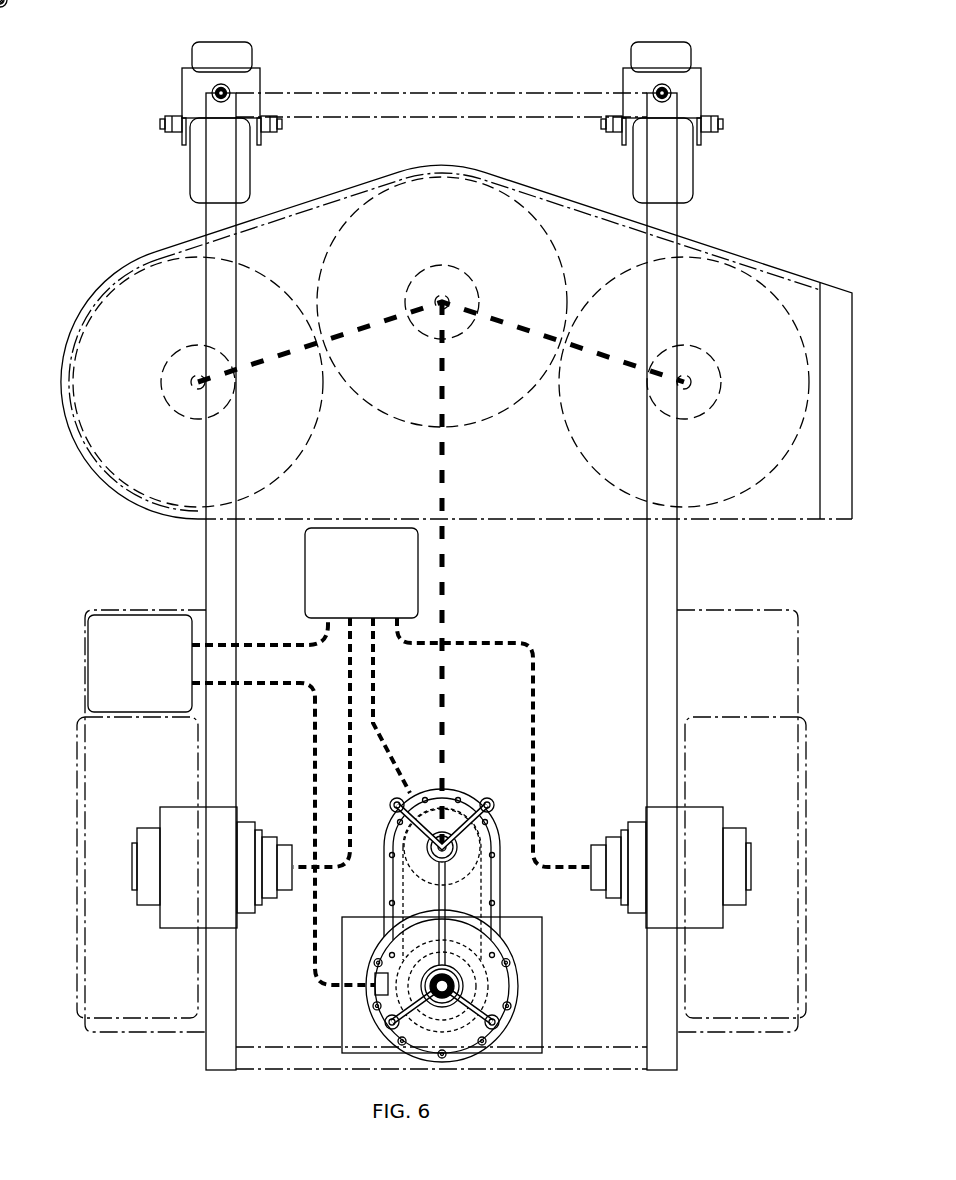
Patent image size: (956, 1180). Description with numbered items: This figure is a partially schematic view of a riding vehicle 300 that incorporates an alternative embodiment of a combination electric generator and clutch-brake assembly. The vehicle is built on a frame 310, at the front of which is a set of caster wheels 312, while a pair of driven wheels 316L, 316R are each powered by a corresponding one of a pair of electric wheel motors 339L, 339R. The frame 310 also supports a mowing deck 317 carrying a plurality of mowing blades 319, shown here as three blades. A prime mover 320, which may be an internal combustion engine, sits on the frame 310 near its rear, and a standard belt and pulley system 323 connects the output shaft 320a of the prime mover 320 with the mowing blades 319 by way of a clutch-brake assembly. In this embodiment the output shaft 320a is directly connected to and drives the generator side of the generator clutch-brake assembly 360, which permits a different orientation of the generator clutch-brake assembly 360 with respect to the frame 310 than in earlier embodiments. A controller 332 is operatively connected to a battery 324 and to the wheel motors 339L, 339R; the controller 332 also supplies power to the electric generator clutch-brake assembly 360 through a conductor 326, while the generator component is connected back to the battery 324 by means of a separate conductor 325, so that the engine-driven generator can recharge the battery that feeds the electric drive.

The riding vehicle 300 is at (100, 95).
The frame 310 is at (350, 93).
The caster wheels 312 is at (255, 50).
The mowing deck 317 is at (333, 193).
The mowing blades 319 is at (157, 265).
The prime mover 320 is at (542, 977).
The output shaft 320a is at (430, 990).
The belt and pulley system 323 is at (443, 586).
The battery 324 is at (161, 676).
The conductor 325 is at (264, 687).
The conductor 326 is at (373, 713).
The controller 332 is at (383, 588).
The electric wheel motor 339L is at (157, 908).
The electric wheel motor 339R is at (726, 908).
The driven wheel 316L is at (78, 995).
The driven wheel 316R is at (808, 1004).
The generator clutch-brake assembly 360 is at (525, 1022).